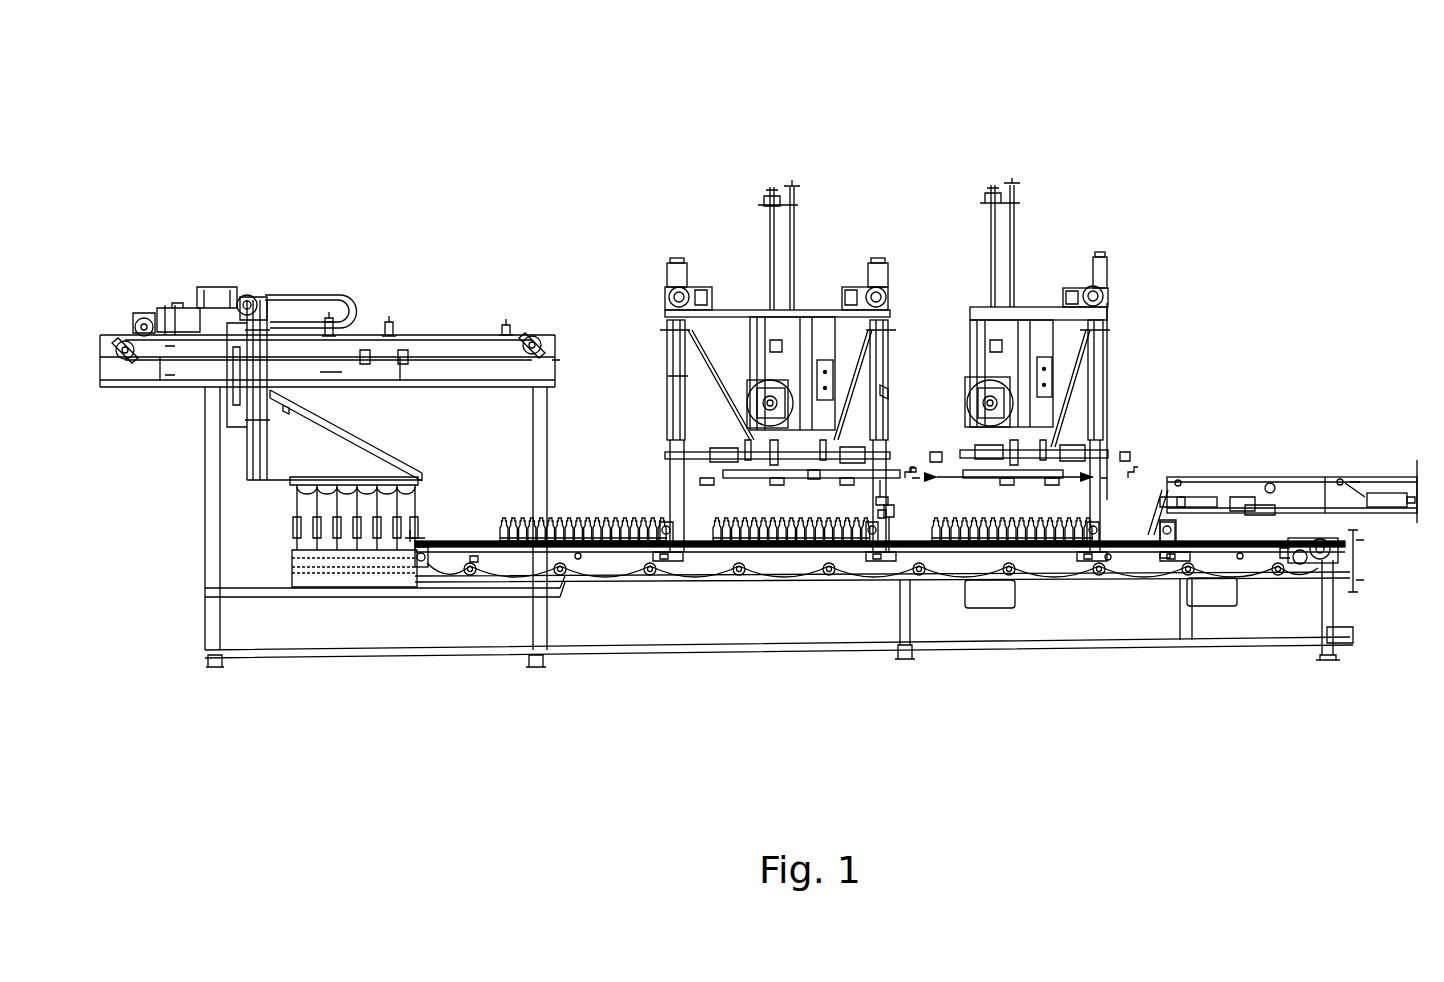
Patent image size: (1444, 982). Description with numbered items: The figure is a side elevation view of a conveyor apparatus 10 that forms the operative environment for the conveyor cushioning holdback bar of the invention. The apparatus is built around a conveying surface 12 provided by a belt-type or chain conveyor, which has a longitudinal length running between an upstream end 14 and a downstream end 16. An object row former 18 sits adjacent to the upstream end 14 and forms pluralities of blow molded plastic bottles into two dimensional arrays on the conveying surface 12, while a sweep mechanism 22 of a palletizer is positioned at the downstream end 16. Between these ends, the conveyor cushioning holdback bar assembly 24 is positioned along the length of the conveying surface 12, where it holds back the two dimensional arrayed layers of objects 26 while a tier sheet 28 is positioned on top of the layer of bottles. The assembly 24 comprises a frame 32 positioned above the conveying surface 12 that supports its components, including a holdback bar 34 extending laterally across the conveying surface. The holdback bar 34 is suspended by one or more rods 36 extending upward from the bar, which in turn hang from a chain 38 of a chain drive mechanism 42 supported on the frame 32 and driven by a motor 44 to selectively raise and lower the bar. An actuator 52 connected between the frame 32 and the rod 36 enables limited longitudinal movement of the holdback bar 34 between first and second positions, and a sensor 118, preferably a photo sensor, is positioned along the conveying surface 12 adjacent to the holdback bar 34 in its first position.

The conveyor apparatus 10 is at (1137, 203).
The conveying surface 12 is at (1131, 535).
The upstream end 14 is at (429, 535).
The downstream end 16 is at (1311, 582).
The object row former 18 is at (289, 528).
The sweep mechanism 22 is at (1283, 458).
The conveyor cushioning holdback bar assembly 24 is at (820, 443).
The objects 26 is at (602, 505).
The tier sheet 28 is at (845, 470).
The frame 32 is at (727, 310).
The holdback bar 34 is at (890, 512).
The rods 36 is at (890, 515).
The chain 38 is at (887, 372).
The chain drive mechanism 42 is at (871, 303).
The motor 44 is at (886, 270).
The actuator 52 is at (861, 454).
The sensor 118 is at (880, 505).